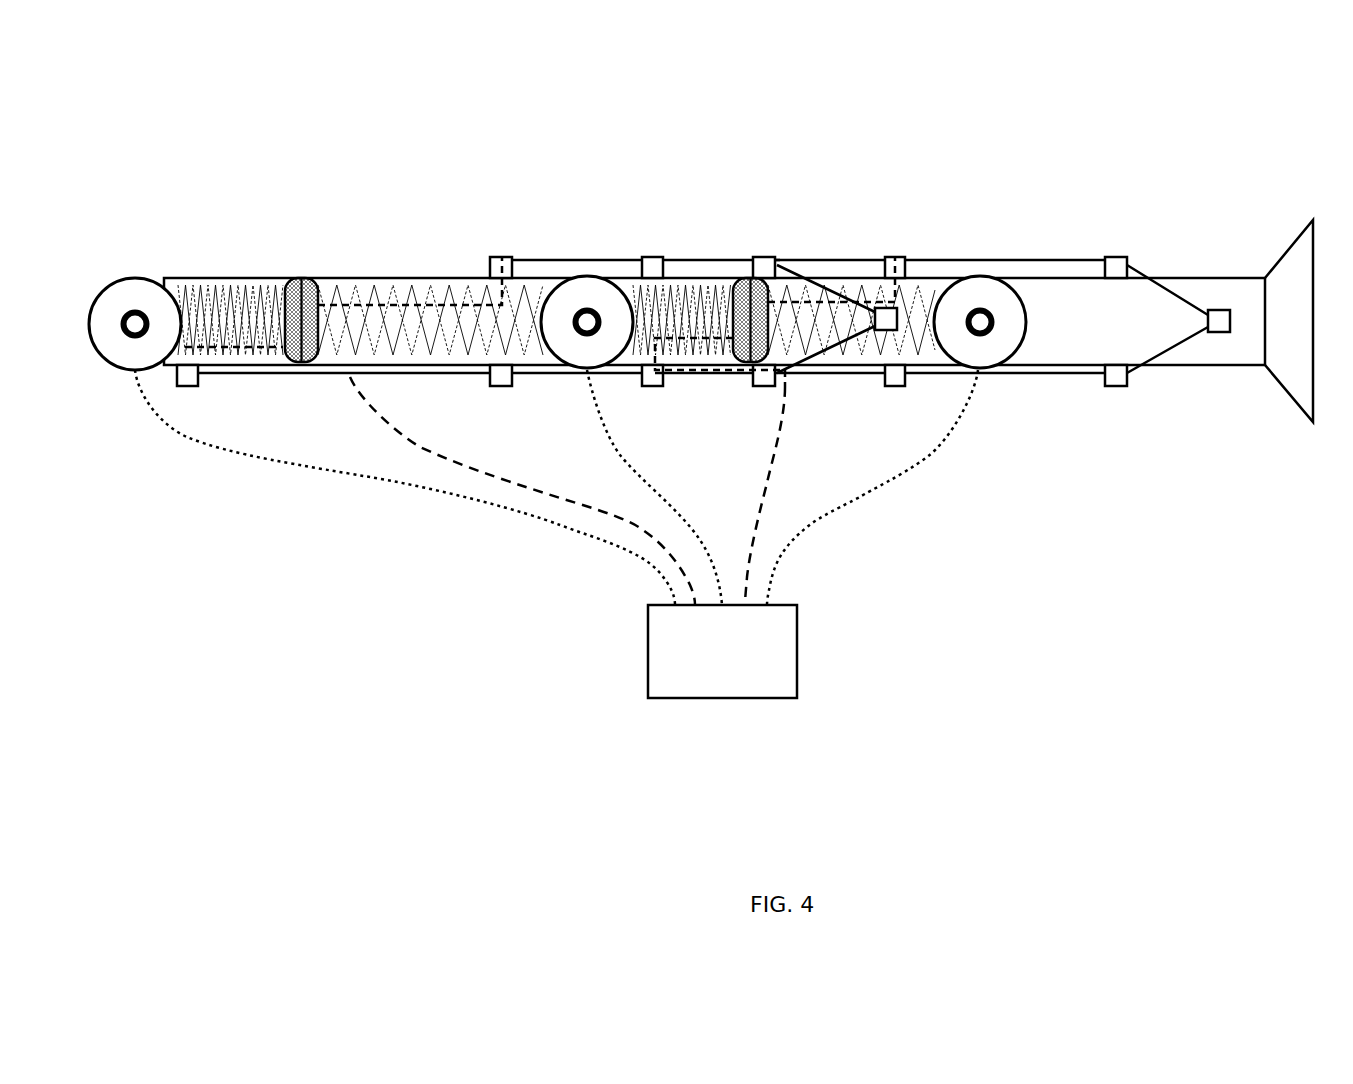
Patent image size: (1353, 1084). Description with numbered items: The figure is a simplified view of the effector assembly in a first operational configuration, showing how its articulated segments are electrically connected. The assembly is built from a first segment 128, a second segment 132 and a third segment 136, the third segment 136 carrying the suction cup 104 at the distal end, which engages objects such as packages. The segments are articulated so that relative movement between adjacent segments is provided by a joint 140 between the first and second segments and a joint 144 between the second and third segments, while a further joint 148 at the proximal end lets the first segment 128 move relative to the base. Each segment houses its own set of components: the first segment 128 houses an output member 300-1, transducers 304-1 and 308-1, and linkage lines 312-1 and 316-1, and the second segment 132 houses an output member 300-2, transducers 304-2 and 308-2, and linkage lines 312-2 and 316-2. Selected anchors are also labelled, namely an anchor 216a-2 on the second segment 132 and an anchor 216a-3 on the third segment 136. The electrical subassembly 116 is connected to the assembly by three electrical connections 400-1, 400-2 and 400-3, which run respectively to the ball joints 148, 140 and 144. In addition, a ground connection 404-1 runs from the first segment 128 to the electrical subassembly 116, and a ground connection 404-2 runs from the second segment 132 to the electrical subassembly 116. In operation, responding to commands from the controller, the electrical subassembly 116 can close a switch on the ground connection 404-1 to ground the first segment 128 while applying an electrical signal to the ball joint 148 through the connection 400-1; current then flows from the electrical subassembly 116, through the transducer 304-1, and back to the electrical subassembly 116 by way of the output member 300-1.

The suction cup 104 is at (1307, 415).
The electrical subassembly 116 is at (722, 651).
The first segment 128 is at (385, 266).
The second segment 132 is at (829, 266).
The third segment 136 is at (1178, 266).
The joint 140 is at (575, 276).
The joint 144 is at (972, 276).
The joint 148 is at (137, 278).
The anchor 216a-2 is at (882, 306).
The anchor 216a-3 is at (1221, 308).
The output member 300-1 is at (290, 280).
The output member 300-2 is at (738, 278).
The transducer 304-1 is at (215, 292).
The transducer 304-2 is at (695, 280).
The transducer 308-1 is at (468, 292).
The transducer 308-2 is at (913, 292).
The linkage line 312-1 is at (288, 375).
The linkage line 312-2 is at (830, 375).
The linkage line 316-1 is at (605, 258).
The linkage line 316-2 is at (1045, 260).
The electrical connection 400-1 is at (367, 477).
The electrical connection 400-2 is at (622, 455).
The electrical connection 400-3 is at (887, 477).
The ground connection 404-1 is at (420, 447).
The ground connection 404-2 is at (767, 485).